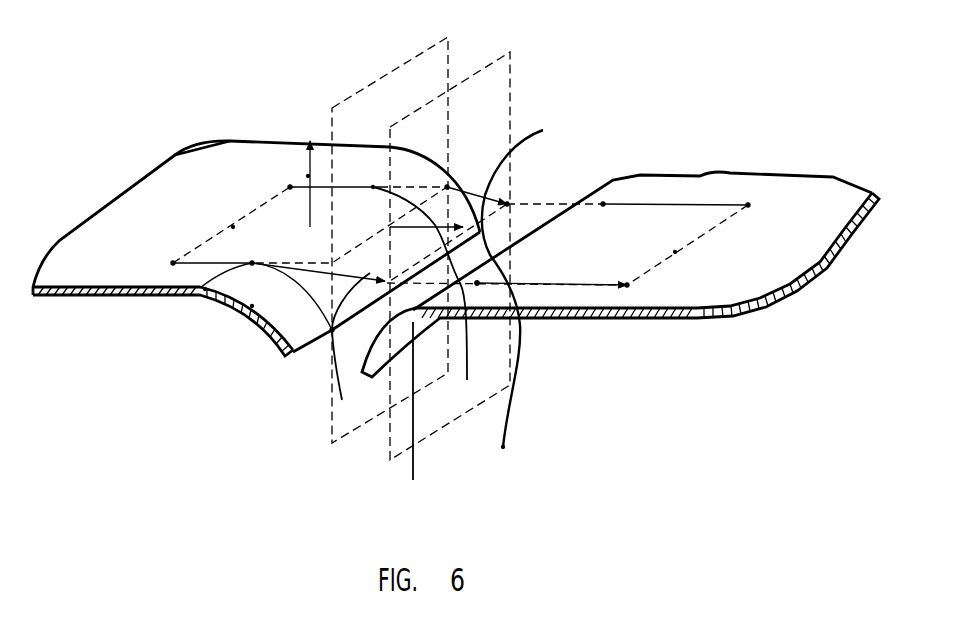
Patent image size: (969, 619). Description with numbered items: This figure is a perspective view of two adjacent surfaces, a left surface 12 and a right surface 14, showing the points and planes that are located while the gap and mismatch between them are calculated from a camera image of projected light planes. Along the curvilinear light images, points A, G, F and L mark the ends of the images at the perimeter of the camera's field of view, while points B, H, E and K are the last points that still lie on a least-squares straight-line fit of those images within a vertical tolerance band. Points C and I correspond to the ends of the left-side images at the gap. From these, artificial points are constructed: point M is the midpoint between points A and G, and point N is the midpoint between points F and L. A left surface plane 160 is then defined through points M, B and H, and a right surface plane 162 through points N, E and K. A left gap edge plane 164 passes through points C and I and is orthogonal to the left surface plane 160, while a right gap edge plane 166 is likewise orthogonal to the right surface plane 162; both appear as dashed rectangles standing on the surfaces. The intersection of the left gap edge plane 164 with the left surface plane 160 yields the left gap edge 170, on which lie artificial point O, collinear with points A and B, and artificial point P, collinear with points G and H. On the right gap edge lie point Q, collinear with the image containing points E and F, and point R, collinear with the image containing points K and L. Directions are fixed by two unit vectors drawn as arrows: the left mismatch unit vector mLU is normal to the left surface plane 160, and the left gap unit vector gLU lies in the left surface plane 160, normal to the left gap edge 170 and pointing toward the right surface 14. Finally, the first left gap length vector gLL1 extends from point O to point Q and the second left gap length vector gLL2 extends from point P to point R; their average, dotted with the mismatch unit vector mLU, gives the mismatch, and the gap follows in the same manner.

The left surface 12 is at (83, 268).
The right surface 14 is at (772, 267).
The left surface plane 160 is at (290, 218).
The right surface plane 162 is at (573, 260).
The left gap edge plane 164 is at (380, 78).
The right gap edge plane 166 is at (510, 55).
The left gap edge 170 is at (360, 243).
The first left gap length vector gLL1 is at (543, 130).
The second left gap length vector gLL2 is at (342, 400).
The left gap unit vector gLU is at (477, 283).
The left mismatch unit vector mLU is at (308, 176).
The point A is at (290, 187).
The point B is at (373, 187).
The point C is at (467, 380).
The point E is at (603, 204).
The point F is at (748, 205).
The point G is at (172, 263).
The point H is at (205, 289).
The point I is at (332, 330).
The point K is at (503, 447).
The point L is at (627, 285).
The point M is at (233, 227).
The point N is at (675, 252).
The point O is at (447, 187).
The point P is at (252, 306).
The point Q is at (507, 204).
The point R is at (413, 480).